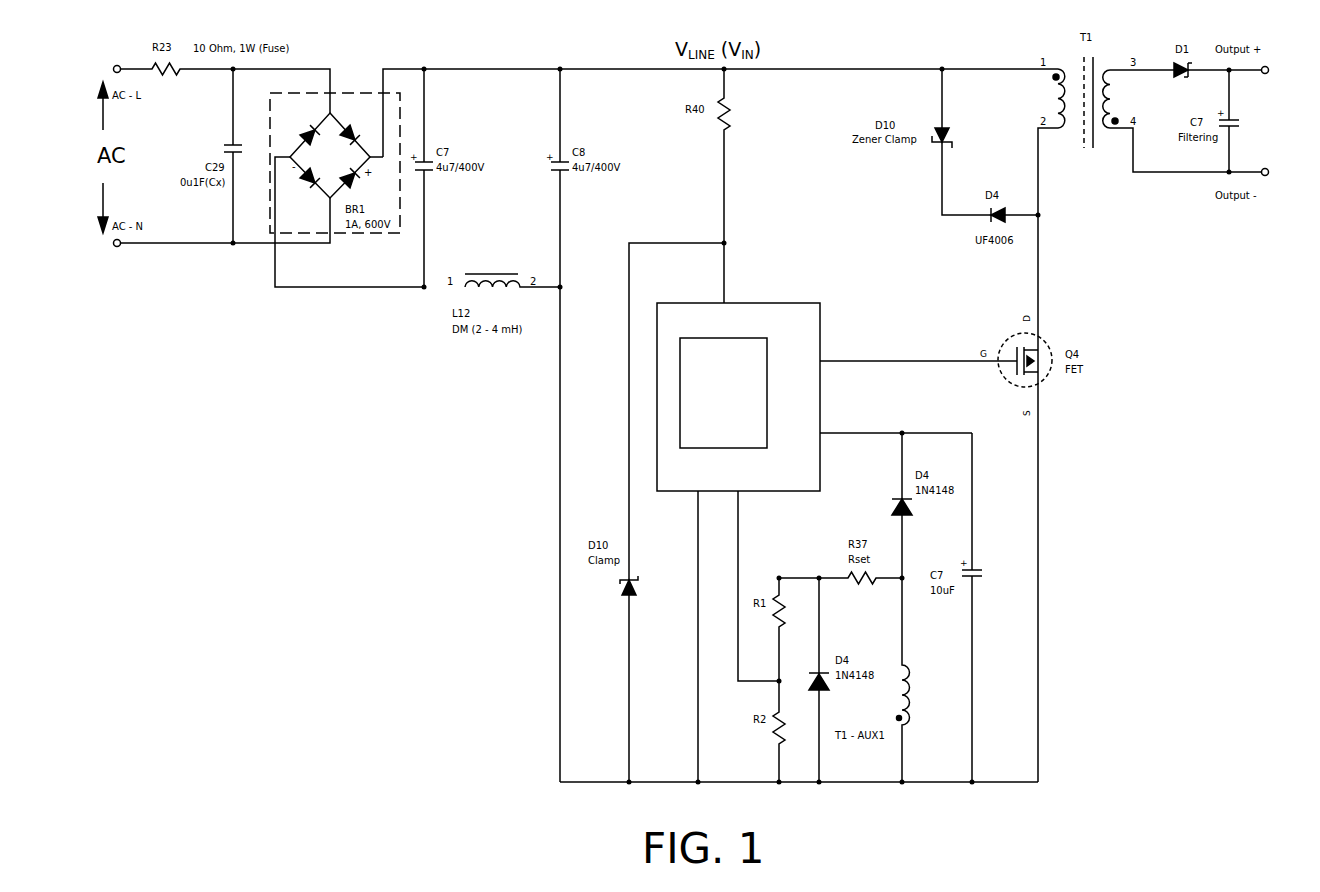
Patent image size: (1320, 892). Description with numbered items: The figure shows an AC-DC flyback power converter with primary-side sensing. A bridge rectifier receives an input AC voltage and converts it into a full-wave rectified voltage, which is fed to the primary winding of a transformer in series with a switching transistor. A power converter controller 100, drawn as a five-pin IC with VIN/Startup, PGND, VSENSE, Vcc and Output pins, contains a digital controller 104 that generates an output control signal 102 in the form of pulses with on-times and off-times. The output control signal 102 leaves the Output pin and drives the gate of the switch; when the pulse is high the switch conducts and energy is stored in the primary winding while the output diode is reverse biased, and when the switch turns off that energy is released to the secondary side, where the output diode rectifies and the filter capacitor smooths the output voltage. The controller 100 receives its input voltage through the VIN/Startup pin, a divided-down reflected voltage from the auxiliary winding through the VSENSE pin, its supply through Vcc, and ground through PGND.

The power converter controller 100 is at (778, 396).
The output control signal 102 is at (878, 361).
The digital controller 104 is at (748, 421).